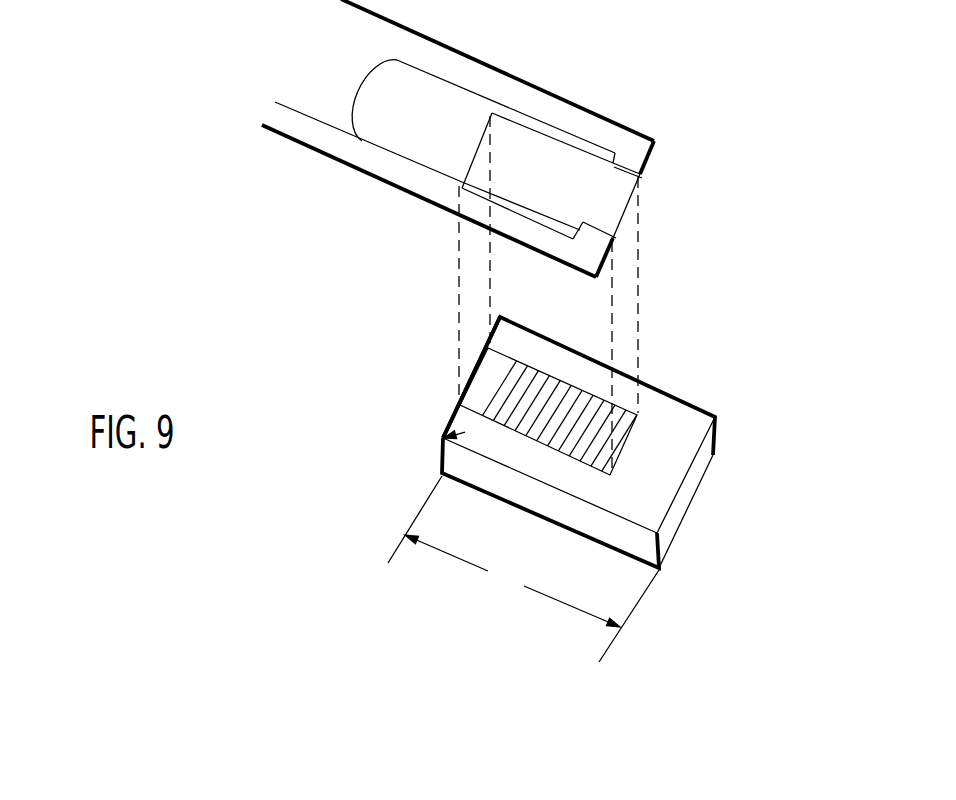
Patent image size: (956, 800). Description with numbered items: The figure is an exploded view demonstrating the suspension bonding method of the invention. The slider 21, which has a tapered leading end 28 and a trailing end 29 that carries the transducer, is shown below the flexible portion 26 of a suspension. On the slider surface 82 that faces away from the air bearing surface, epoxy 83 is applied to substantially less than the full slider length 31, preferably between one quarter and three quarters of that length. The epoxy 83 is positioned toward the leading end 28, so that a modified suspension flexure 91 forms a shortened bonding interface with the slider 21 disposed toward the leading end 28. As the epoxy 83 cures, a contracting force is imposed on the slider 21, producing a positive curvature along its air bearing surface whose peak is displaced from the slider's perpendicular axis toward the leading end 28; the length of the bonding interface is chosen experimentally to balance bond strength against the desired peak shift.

The flexible portion of suspension 26 is at (458, 138).
The modified suspension flexure 91 is at (552, 176).
The trailing end 29 is at (680, 503).
The slider 21 is at (550, 485).
The epoxy 83 is at (635, 410).
The tapered leading end 28 is at (444, 434).
The slider surface 82 is at (442, 440).
The slider length 31 is at (523, 569).